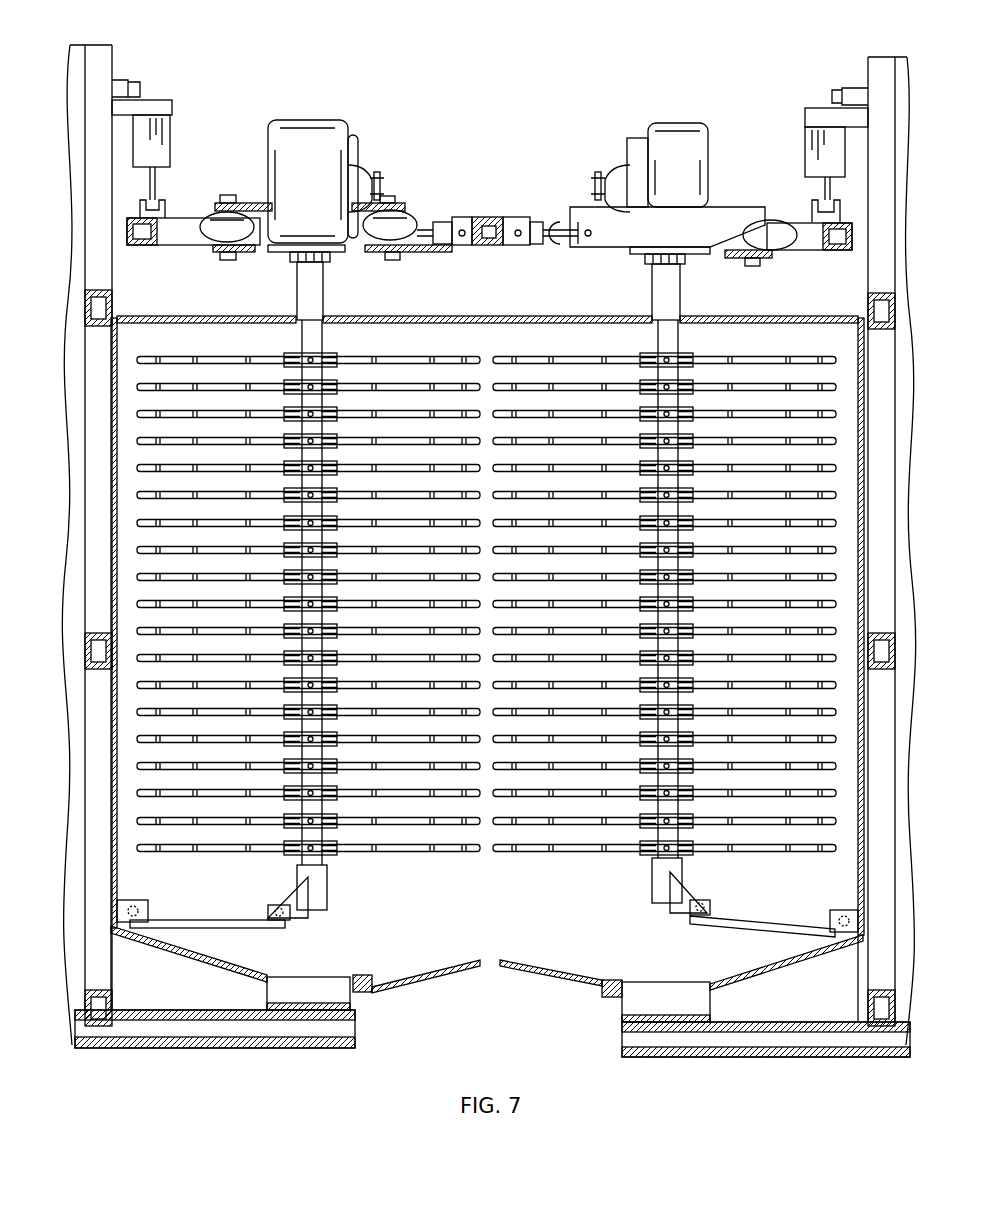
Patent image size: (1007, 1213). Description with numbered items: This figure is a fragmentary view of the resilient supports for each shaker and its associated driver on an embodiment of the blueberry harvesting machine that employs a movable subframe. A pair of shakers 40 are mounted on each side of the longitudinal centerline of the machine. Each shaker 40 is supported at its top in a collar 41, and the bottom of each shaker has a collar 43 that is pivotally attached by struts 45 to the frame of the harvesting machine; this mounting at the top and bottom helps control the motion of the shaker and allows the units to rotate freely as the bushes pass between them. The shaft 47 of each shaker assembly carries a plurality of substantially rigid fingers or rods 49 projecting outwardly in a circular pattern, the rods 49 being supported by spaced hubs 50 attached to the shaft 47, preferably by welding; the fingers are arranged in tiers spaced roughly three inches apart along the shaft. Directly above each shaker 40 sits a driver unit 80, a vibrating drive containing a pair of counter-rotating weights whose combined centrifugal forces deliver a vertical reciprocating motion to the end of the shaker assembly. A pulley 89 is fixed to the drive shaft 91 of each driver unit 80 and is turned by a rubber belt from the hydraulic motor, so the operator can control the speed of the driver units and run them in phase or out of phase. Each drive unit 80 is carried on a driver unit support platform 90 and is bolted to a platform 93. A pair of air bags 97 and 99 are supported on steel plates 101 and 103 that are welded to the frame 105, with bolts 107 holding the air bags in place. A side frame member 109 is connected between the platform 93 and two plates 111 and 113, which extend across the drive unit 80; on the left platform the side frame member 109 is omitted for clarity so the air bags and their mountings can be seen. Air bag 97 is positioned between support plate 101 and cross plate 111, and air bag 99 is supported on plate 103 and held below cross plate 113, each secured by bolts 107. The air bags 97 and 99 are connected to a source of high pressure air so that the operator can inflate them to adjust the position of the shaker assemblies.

The shaker 40 is at (392, 344).
The collar 41 is at (323, 300).
The collar 43 is at (328, 888).
The struts 45 is at (192, 920).
The shaft 47 is at (300, 344).
The fingers or rods 49 is at (206, 356).
The hubs 50 is at (328, 353).
The driver unit 80 is at (300, 120).
The pulley 89 is at (382, 182).
The driver unit support platform 90 is at (490, 187).
The drive shaft 91 is at (372, 172).
The platform 93 is at (277, 254).
The air bag 97 is at (213, 222).
The air bag 99 is at (412, 226).
The steel plate 101 is at (210, 250).
The steel plate 103 is at (428, 254).
The frame 105 is at (118, 52).
The bolts 107 is at (225, 198).
The side frame member 109 is at (718, 208).
The plate 111 is at (256, 204).
The plate 113 is at (400, 205).